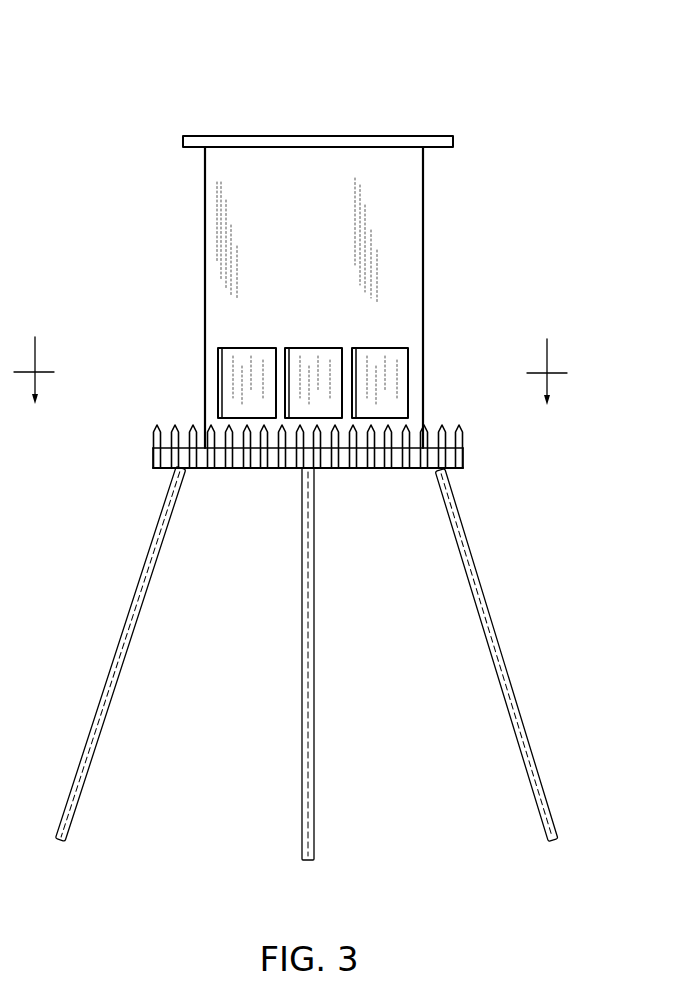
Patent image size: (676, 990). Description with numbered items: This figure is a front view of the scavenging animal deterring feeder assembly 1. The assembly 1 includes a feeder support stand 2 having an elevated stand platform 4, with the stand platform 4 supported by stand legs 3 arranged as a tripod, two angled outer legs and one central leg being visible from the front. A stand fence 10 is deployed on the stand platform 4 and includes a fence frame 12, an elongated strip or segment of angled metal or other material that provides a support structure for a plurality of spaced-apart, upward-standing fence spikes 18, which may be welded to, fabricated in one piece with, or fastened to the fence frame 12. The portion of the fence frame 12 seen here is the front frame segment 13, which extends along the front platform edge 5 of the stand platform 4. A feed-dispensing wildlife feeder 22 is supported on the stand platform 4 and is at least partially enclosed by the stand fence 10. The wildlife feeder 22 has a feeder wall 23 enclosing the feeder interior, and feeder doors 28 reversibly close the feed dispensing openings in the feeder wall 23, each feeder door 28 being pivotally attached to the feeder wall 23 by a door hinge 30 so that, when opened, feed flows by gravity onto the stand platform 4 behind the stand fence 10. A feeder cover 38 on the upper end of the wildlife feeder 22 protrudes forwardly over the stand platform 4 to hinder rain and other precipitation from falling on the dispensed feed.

The assembly 1 is at (530, 55).
The feeder support stand 2 is at (118, 571).
The stand leg 3 is at (302, 703).
The stand platform 4 is at (140, 462).
The front platform edge 5 is at (290, 359).
The stand fence 10 is at (169, 410).
The fence frame 12 is at (258, 482).
The front frame segment 13 is at (374, 471).
The fence spikes 18 is at (438, 425).
The feed-dispensing wildlife feeder 22 is at (200, 271).
The feeder wall 23 is at (396, 256).
The feeder door 28 is at (327, 348).
The door hinge 30 is at (222, 348).
The feeder cover 38 is at (455, 143).